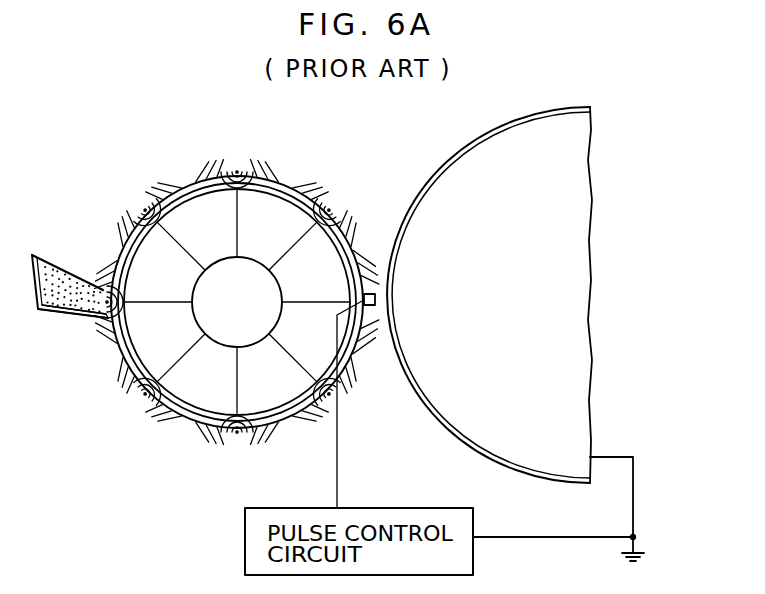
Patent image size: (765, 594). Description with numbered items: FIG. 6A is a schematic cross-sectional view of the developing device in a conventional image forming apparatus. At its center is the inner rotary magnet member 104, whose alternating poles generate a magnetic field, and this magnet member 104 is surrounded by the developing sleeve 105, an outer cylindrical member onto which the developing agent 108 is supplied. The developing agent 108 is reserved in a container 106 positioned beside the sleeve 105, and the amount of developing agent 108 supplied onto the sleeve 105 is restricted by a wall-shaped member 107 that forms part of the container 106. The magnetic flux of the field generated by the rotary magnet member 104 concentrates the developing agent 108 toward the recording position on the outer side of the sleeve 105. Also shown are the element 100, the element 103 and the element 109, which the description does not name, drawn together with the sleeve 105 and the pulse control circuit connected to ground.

The electrode 100 is at (376, 291).
The magnetic pole 103 is at (234, 163).
The inner rotary magnet member 104 is at (172, 400).
The developing sleeve 105 is at (135, 382).
The container 106 is at (33, 287).
The wall-shaped member 107 is at (72, 313).
The developing agent 108 is at (65, 265).
The photosensitive drum 109 is at (490, 127).